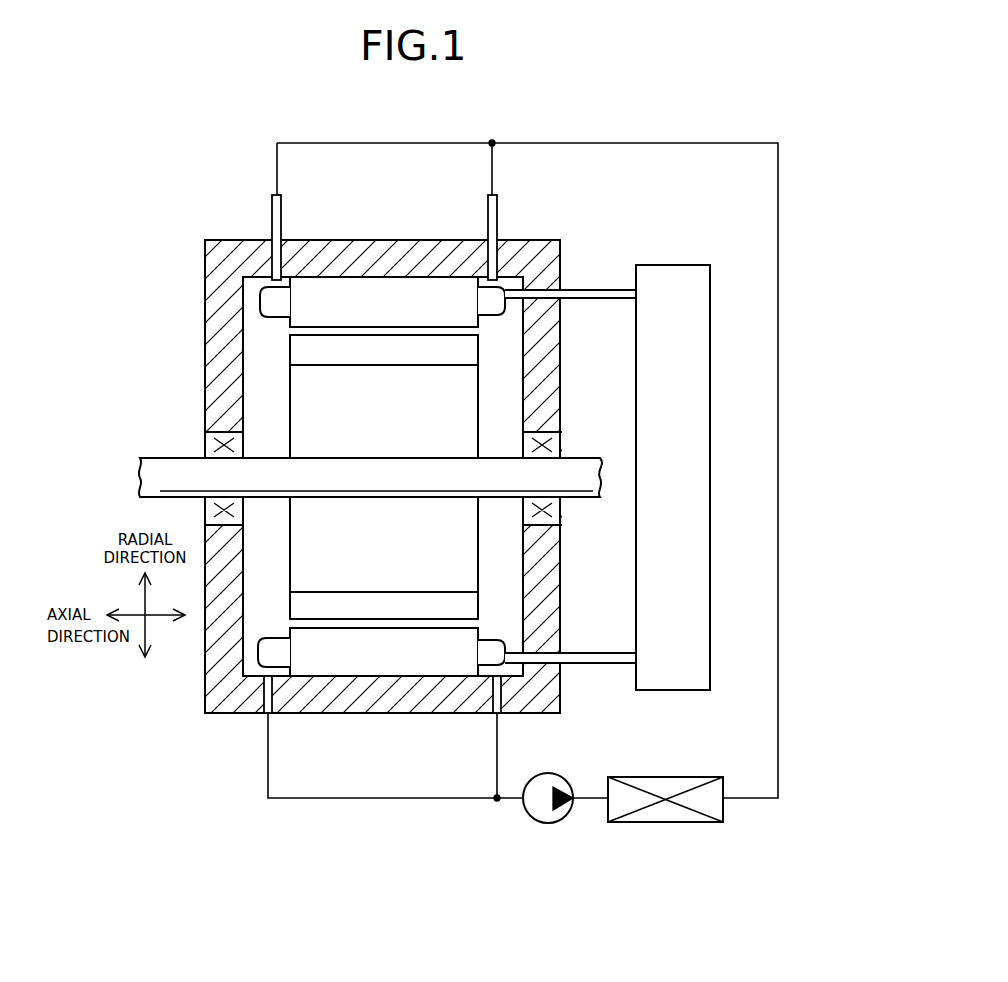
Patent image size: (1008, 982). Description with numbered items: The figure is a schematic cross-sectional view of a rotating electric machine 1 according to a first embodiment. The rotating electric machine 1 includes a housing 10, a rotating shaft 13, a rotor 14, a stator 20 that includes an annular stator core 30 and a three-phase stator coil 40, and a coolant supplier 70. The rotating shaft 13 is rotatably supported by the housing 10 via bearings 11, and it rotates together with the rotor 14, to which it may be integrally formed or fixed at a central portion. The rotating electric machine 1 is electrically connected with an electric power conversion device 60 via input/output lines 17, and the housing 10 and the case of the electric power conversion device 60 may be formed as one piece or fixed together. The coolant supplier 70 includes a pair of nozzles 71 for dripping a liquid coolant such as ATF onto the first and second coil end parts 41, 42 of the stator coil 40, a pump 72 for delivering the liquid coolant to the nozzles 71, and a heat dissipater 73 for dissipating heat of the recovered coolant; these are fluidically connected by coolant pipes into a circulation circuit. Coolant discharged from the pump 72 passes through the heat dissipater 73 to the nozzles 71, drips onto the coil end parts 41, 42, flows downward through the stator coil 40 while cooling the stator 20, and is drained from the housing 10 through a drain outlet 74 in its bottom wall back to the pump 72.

The rotating electric machine 1 is at (192, 181).
The housing 10 is at (205, 297).
The bearings 11 is at (222, 438).
The rotating shaft 13 is at (175, 478).
The rotor 14 is at (392, 385).
The input/output lines 17 is at (590, 290).
The stator 20 is at (384, 422).
The stator core 30 is at (318, 300).
The stator coil 40 is at (255, 651).
The first coil end part 41 is at (272, 300).
The second coil end part 42 is at (497, 300).
The electric power conversion device 60 is at (712, 317).
The coolant supplier 70 is at (597, 130).
The nozzles 71 is at (272, 220).
The pump 72 is at (546, 824).
The heat dissipater 73 is at (656, 824).
The drain outlet 74 is at (265, 690).